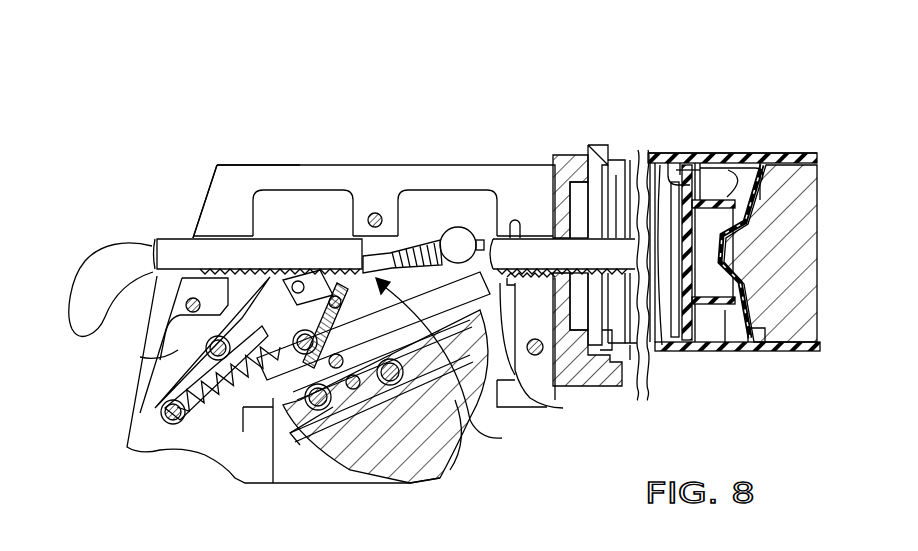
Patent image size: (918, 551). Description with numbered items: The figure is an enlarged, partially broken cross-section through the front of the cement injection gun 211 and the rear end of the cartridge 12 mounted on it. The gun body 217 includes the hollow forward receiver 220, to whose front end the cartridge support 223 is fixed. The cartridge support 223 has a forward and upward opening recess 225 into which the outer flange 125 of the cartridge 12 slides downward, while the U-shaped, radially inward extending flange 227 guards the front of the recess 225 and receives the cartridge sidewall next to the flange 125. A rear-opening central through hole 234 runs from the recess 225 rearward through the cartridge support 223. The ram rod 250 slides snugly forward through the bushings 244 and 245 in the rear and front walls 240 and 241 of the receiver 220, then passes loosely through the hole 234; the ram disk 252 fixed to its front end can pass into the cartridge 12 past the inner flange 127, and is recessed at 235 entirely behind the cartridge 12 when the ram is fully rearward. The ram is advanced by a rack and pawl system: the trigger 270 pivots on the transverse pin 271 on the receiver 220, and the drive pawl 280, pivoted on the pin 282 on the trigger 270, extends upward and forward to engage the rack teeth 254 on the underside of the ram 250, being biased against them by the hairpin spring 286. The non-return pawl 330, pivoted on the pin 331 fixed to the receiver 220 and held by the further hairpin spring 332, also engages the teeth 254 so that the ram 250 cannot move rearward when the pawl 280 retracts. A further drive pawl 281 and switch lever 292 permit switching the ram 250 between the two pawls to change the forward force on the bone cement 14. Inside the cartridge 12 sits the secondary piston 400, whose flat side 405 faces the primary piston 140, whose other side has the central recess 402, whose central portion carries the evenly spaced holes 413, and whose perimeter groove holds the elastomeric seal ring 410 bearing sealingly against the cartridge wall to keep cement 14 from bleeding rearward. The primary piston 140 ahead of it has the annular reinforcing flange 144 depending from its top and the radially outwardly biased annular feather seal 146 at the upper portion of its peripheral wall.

The cartridge 12 is at (800, 150).
The bone cement 14 is at (810, 282).
The radially outwardly extending flange 125 is at (580, 200).
The radially inwardly extending flange 127 is at (600, 173).
The primary piston 140 is at (760, 232).
The annular cylindrical reinforcing flange 144 is at (707, 167).
The annular feather seal 146 is at (753, 177).
The gun 211 is at (236, 146).
The body 217 is at (275, 108).
The receiver 220 is at (315, 162).
The cartridge support 223 is at (562, 148).
The recess 225 is at (653, 367).
The radially inward extending flange 227 is at (630, 363).
The central through hole 234 is at (637, 147).
The recess for ram disk 235 is at (627, 147).
The rear wall 240 is at (143, 403).
The front wall 241 is at (528, 393).
The bushing 244 is at (213, 239).
The bushing 245 is at (528, 235).
The ram rod 250 is at (90, 254).
The ram disk 252 is at (672, 355).
The rack teeth 254 is at (543, 392).
The trigger 270 is at (420, 455).
The transverse pin 271 is at (357, 390).
The drive pawl 280 is at (363, 255).
The further drive pawl 281 is at (460, 458).
The pivot pin 282 is at (267, 405).
The hairpin spring 286 is at (333, 407).
The switch lever 292 is at (461, 367).
The non-return pawl 330 is at (230, 322).
The transverse pin 331 is at (173, 381).
The hairpin spring 332 is at (200, 362).
The secondary piston 400 is at (663, 153).
The central recess 402 is at (673, 353).
The flat side 405 is at (693, 170).
The elastomeric seal ring 410 is at (692, 165).
The holes 413 is at (735, 335).